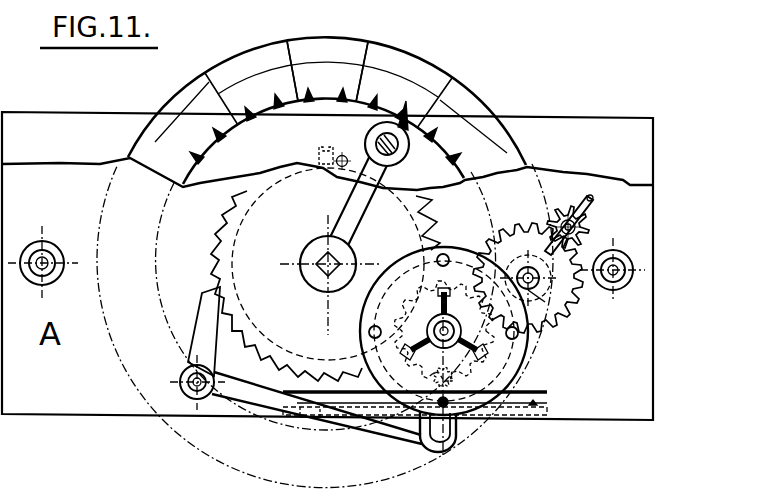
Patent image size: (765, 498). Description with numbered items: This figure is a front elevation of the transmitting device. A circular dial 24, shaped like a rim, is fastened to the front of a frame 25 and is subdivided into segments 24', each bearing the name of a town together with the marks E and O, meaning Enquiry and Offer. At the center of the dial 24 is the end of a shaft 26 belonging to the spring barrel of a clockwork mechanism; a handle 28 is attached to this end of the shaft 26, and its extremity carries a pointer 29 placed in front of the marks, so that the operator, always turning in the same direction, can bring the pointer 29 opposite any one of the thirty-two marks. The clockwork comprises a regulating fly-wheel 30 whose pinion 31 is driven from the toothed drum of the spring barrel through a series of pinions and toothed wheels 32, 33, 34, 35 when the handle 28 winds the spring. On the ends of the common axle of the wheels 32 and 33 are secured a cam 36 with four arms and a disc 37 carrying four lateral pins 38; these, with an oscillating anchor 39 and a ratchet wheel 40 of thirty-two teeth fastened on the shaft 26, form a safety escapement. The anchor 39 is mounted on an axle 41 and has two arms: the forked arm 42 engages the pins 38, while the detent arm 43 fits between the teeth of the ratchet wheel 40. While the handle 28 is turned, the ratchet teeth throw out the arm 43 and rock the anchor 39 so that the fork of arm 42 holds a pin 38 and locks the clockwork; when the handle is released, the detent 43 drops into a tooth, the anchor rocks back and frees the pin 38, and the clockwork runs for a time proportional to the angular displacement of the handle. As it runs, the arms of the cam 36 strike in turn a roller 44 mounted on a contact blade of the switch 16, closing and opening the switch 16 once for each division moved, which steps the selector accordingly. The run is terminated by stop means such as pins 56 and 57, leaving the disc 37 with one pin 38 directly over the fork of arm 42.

The switch 16 is at (547, 409).
The circular dial 24 is at (327, 110).
The dial segment 24' is at (327, 51).
The frame 25 is at (327, 266).
The shaft 26 is at (320, 277).
The handle 28 is at (347, 208).
The pointer 29 is at (407, 147).
The regulating fly-wheel 30 is at (592, 199).
The pinion 31 is at (562, 214).
The toothed wheel 32 is at (432, 347).
The toothed wheel 33 is at (530, 339).
The toothed wheel 34 is at (547, 293).
The toothed wheel 35 is at (506, 232).
The cam 36 is at (444, 327).
The disc 37 is at (357, 345).
The lateral pin 38 is at (445, 255).
The oscillating anchor 39 is at (233, 398).
The ratchet wheel 40 is at (216, 259).
The axle 41 is at (185, 378).
The forked arm 42 is at (386, 436).
The detent arm 43 is at (203, 311).
The roller 44 is at (435, 376).
The stop pin 56 is at (343, 154).
The stop pin 57 is at (321, 147).